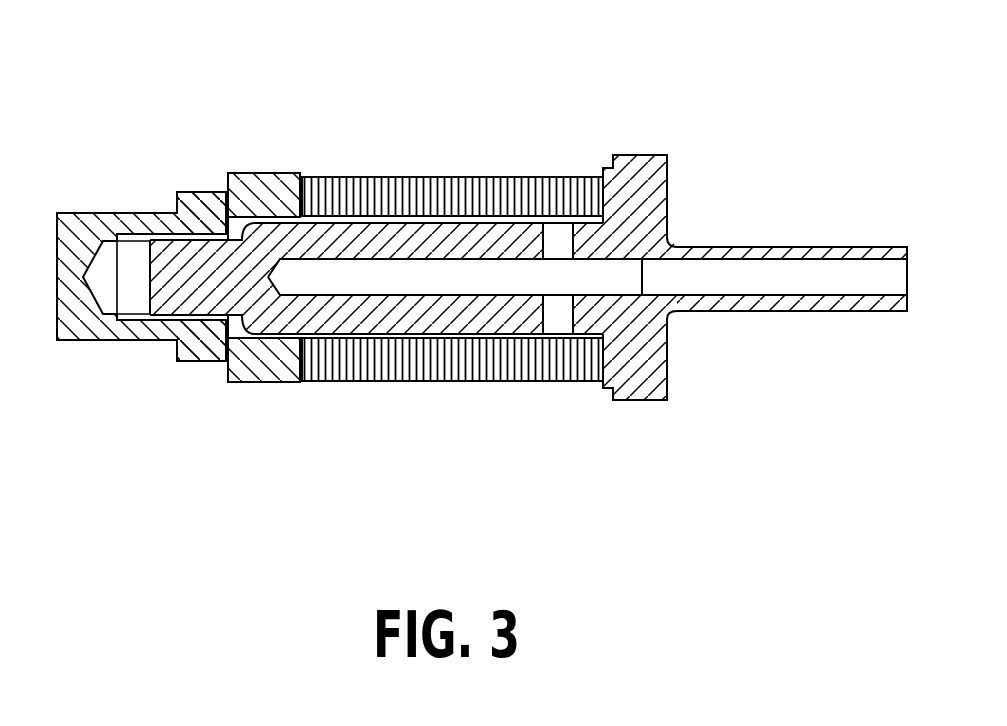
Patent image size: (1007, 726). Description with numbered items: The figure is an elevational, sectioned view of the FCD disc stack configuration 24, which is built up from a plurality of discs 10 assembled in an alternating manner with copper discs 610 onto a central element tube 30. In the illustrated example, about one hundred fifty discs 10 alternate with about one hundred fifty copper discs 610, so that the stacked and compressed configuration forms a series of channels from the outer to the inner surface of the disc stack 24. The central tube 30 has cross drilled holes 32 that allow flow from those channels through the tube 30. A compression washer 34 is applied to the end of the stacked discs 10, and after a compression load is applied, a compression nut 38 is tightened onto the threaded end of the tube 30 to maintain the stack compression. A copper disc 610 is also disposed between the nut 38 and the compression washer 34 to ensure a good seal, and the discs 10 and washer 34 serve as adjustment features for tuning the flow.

The disc stack configuration 24 is at (211, 404).
The compression nut 38 is at (108, 213).
The copper disc 610 is at (226, 192).
The compression washer 34 is at (276, 173).
The disc 10 is at (503, 177).
The cross drilled holes 32 is at (548, 313).
The central element tube 30 is at (650, 155).